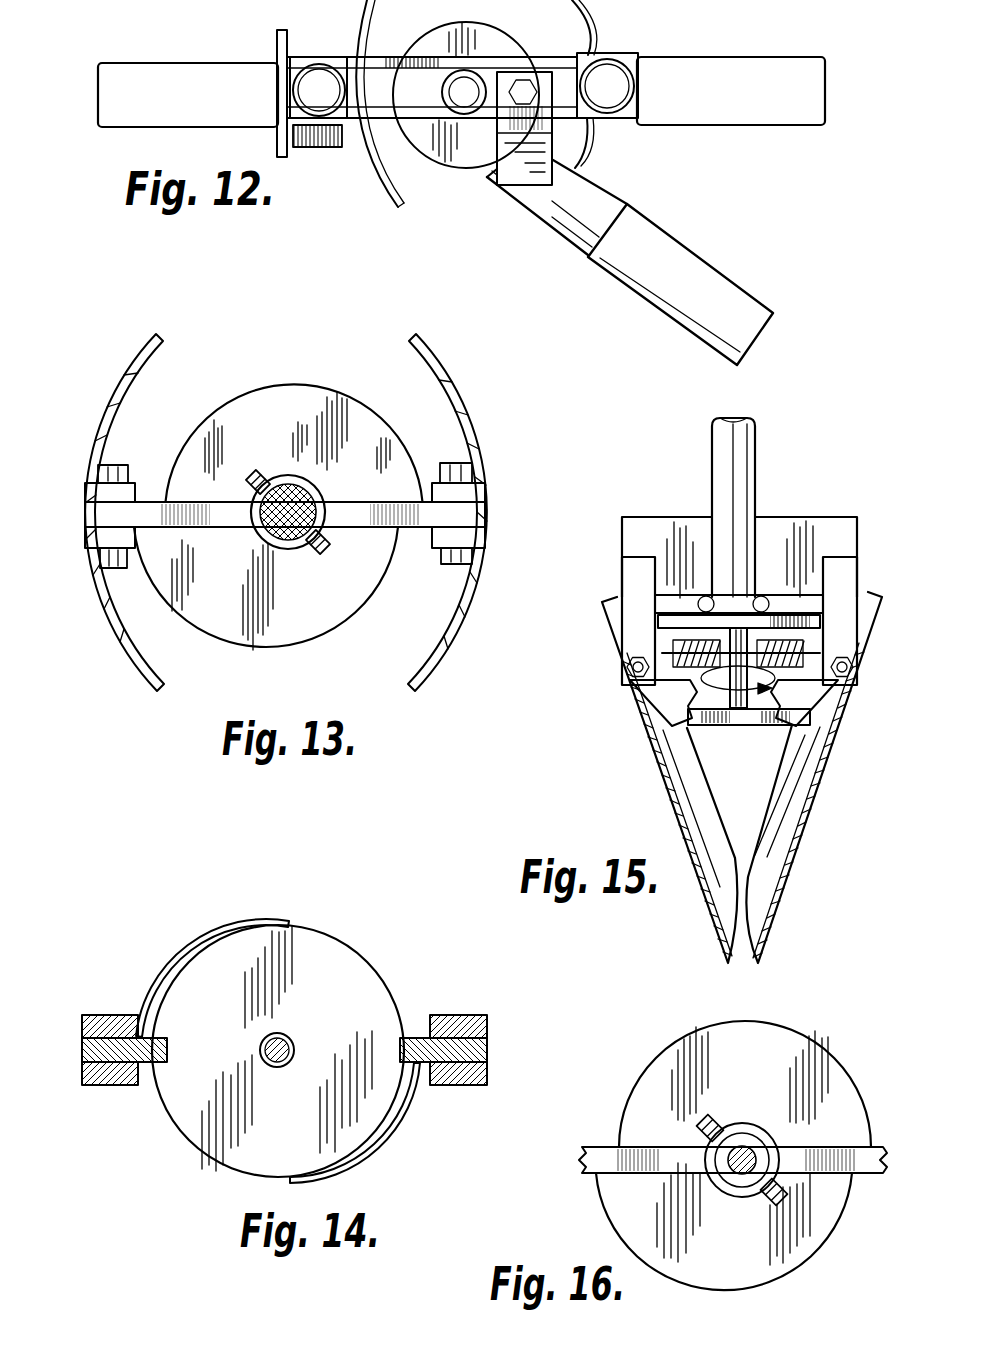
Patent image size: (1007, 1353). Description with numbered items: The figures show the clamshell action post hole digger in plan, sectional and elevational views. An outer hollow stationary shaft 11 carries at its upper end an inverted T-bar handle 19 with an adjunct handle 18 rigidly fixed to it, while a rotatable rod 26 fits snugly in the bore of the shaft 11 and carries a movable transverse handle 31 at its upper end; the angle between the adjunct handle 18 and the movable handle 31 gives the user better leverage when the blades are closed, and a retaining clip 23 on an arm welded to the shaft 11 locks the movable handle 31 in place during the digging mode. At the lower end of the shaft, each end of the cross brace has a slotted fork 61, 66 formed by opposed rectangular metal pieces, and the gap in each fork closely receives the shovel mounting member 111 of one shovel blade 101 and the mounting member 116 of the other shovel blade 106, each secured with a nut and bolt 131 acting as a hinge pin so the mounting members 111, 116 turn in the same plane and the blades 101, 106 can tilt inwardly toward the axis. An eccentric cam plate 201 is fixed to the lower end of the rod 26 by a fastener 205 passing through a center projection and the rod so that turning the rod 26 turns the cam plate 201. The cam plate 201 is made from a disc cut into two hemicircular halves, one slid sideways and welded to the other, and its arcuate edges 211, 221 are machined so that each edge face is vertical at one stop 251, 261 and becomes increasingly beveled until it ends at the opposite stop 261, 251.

In FIG. 12, the movable transverse handle 31 is at (210, 62).
In FIG. 12, the outer hollow stationary shaft 11 is at (477, 83).
In FIG. 12, the inverted T-bar handle 19 is at (707, 57).
In FIG. 12, the retaining clip 23 is at (335, 150).
In FIG. 12, the rotatable rod 26 is at (472, 115).
In FIG. 16, the rotatable rod 26 is at (773, 1137).
In FIG. 12, the adjunct handle 18 is at (703, 262).
In FIG. 13, the shovel blade 101 is at (131, 368).
In FIG. 13, the shovel blade 106 is at (460, 390).
In FIG. 13, the fastener 205 is at (255, 476).
In FIG. 13, the slotted fork 61 is at (88, 538).
In FIG. 13, the slotted fork 66 is at (480, 537).
In FIG. 13, the nut and bolt 131 is at (110, 568).
In FIG. 13, the eccentric cam plate 201 is at (338, 646).
In FIG. 14, the arcuate edge 211 is at (163, 990).
In FIG. 14, the arcuate edge 221 is at (403, 1123).
In FIG. 14, the shovel mounting member 116 is at (82, 1063).
In FIG. 14, the shovel mounting member 111 is at (487, 1048).
In FIG. 14, the stop 251 is at (153, 1064).
In FIG. 14, the stop 261 is at (413, 1027).